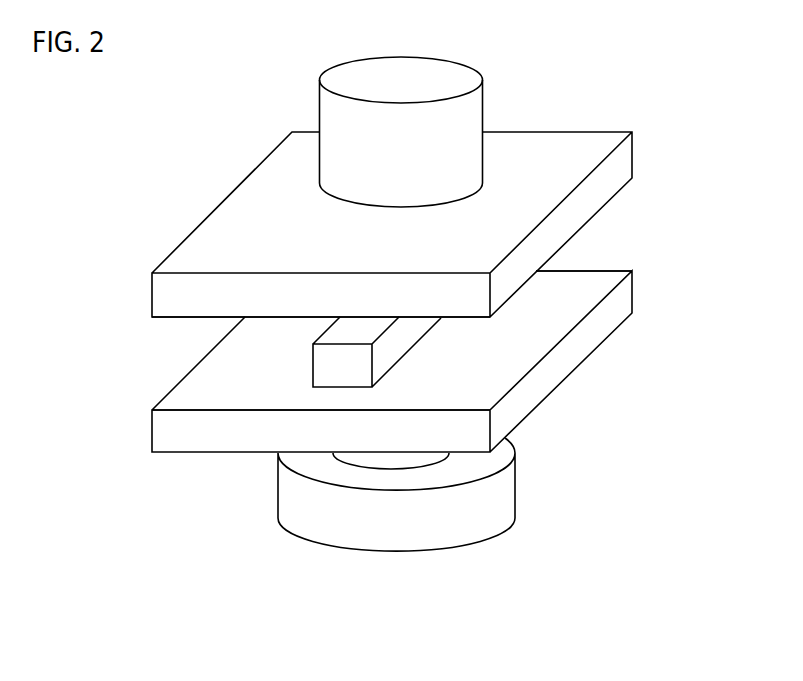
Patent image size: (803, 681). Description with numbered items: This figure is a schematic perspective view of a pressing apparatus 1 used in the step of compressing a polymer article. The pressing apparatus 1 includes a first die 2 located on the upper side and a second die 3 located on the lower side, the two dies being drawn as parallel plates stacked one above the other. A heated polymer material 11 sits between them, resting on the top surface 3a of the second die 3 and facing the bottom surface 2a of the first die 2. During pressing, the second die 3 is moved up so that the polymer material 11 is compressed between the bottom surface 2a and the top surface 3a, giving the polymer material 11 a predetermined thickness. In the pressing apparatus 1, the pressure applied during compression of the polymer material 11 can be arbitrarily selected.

The pressing apparatus 1 is at (280, 238).
The first die 2 is at (636, 158).
The bottom surface 2a is at (180, 317).
The second die 3 is at (636, 292).
The top surface 3a is at (585, 285).
The polymer material 11 is at (340, 387).